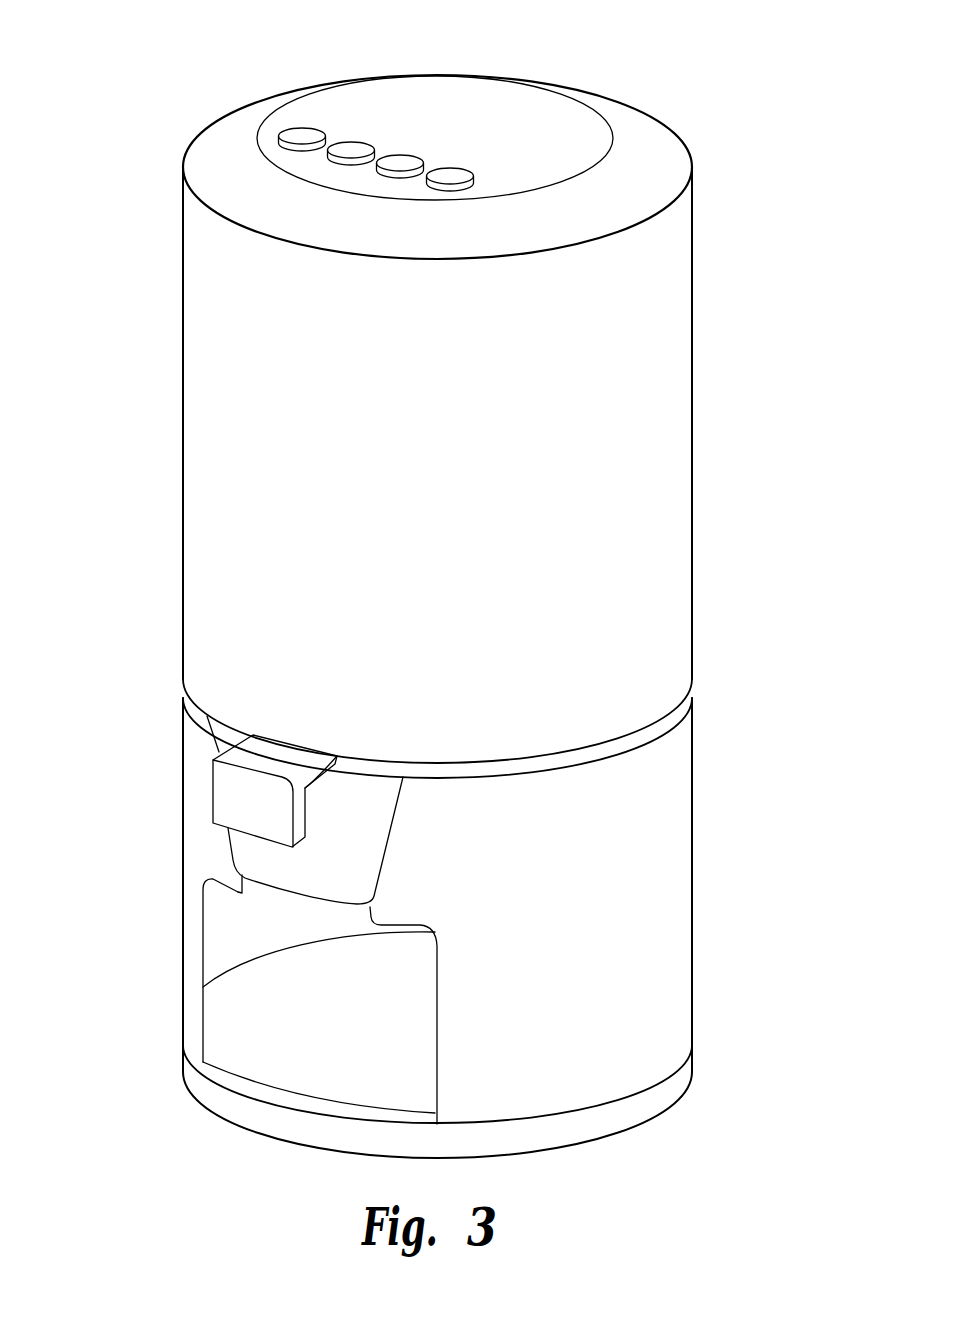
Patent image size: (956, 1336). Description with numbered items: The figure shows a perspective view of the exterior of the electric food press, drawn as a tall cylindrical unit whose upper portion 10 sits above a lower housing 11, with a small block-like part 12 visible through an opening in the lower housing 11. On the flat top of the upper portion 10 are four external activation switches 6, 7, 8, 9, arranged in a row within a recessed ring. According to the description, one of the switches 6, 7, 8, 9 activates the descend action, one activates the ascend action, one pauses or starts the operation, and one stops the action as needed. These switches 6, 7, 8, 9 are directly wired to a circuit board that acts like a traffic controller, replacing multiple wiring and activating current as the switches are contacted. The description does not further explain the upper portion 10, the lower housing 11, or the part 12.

The switch 6 is at (302, 129).
The switch 7 is at (347, 147).
The switch 8 is at (398, 160).
The switch 9 is at (452, 174).
The upper housing 10 is at (230, 440).
The lower housing 11 is at (668, 894).
The dispensing block 12 is at (233, 793).